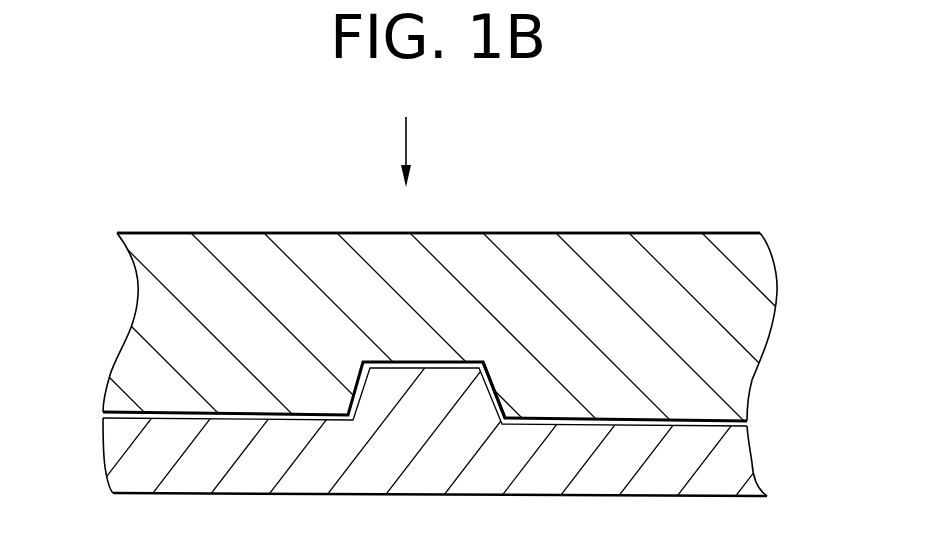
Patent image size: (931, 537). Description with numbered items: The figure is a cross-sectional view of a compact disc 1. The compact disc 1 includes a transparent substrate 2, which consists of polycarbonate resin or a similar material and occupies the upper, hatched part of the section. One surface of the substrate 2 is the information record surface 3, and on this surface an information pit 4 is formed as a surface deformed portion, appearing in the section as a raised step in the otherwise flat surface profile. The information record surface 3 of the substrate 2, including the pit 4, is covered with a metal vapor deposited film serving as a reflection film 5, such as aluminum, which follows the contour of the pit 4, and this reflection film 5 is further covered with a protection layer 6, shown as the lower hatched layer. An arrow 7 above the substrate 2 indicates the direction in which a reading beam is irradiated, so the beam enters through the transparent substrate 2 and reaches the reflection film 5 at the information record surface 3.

The compact disc 1 is at (333, 215).
The transparent substrate 2 is at (558, 250).
The information record surface 3 is at (618, 425).
The information pit 4 is at (493, 382).
The reflection film 5 is at (747, 422).
The protection layer 6 is at (733, 466).
The arrow 7 is at (405, 132).